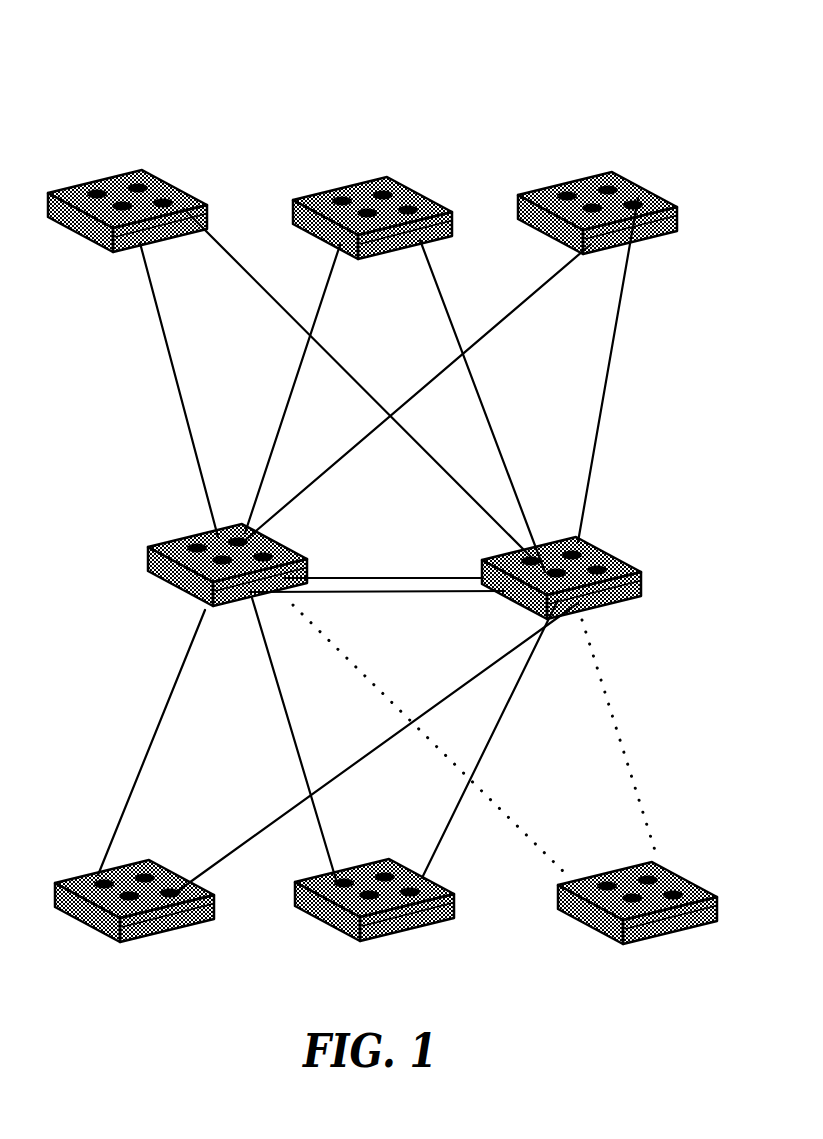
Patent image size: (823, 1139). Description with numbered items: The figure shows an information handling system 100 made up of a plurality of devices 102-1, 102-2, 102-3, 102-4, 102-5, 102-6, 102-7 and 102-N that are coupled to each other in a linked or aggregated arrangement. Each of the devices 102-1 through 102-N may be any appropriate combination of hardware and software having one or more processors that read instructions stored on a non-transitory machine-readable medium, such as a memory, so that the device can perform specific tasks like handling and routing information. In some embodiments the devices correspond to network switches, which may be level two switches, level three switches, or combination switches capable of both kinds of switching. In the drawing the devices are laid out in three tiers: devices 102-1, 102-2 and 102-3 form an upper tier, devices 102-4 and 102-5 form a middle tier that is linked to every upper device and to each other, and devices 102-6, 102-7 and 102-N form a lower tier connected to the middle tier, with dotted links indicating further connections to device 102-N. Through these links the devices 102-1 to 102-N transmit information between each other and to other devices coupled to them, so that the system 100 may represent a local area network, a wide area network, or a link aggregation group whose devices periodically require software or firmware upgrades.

The information handling system 100 is at (65, 40).
The device 102-1 is at (127, 188).
The device 102-2 is at (372, 192).
The device 102-3 is at (597, 189).
The device 102-4 is at (196, 559).
The device 102-5 is at (589, 566).
The device 102-6 is at (134, 926).
The device 102-7 is at (374, 925).
The device 102-N is at (637, 927).